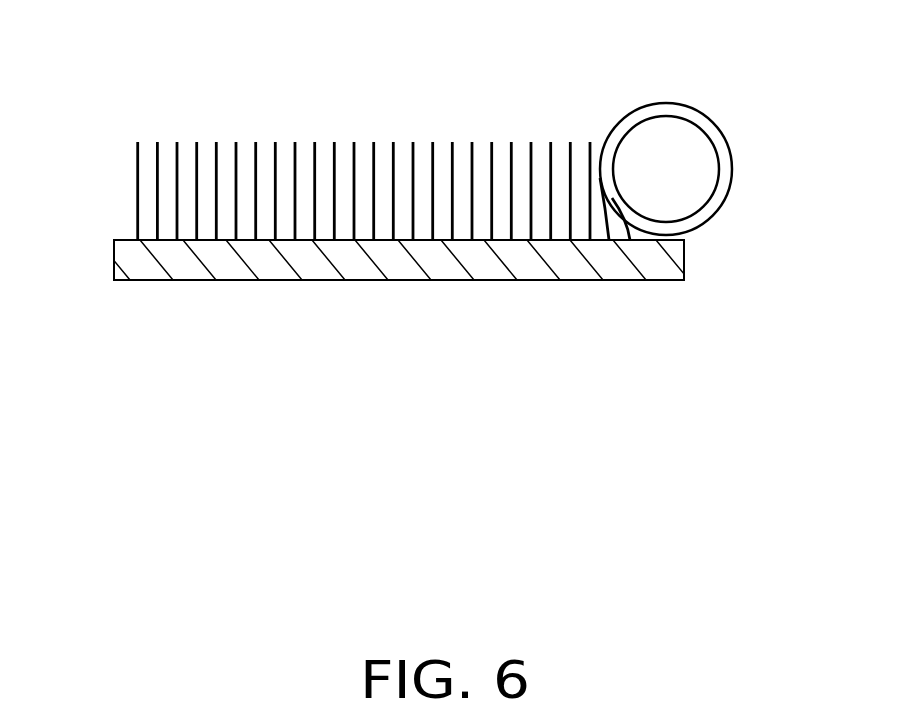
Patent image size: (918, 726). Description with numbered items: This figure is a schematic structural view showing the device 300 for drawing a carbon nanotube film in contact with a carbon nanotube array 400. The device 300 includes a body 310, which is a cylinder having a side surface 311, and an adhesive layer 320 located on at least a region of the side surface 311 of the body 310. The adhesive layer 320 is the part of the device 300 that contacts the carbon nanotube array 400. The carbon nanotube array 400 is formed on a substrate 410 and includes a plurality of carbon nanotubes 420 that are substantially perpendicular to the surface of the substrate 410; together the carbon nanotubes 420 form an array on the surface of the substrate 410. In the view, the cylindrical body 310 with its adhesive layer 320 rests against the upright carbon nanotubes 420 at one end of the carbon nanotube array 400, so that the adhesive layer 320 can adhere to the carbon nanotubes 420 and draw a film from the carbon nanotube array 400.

The device 300 is at (690, 128).
The body 310 is at (693, 158).
The side surface 311 is at (615, 185).
The adhesive layer 320 is at (727, 180).
The carbon nanotube array 400 is at (360, 169).
The substrate 410 is at (116, 258).
The carbon nanotubes 420 is at (135, 198).